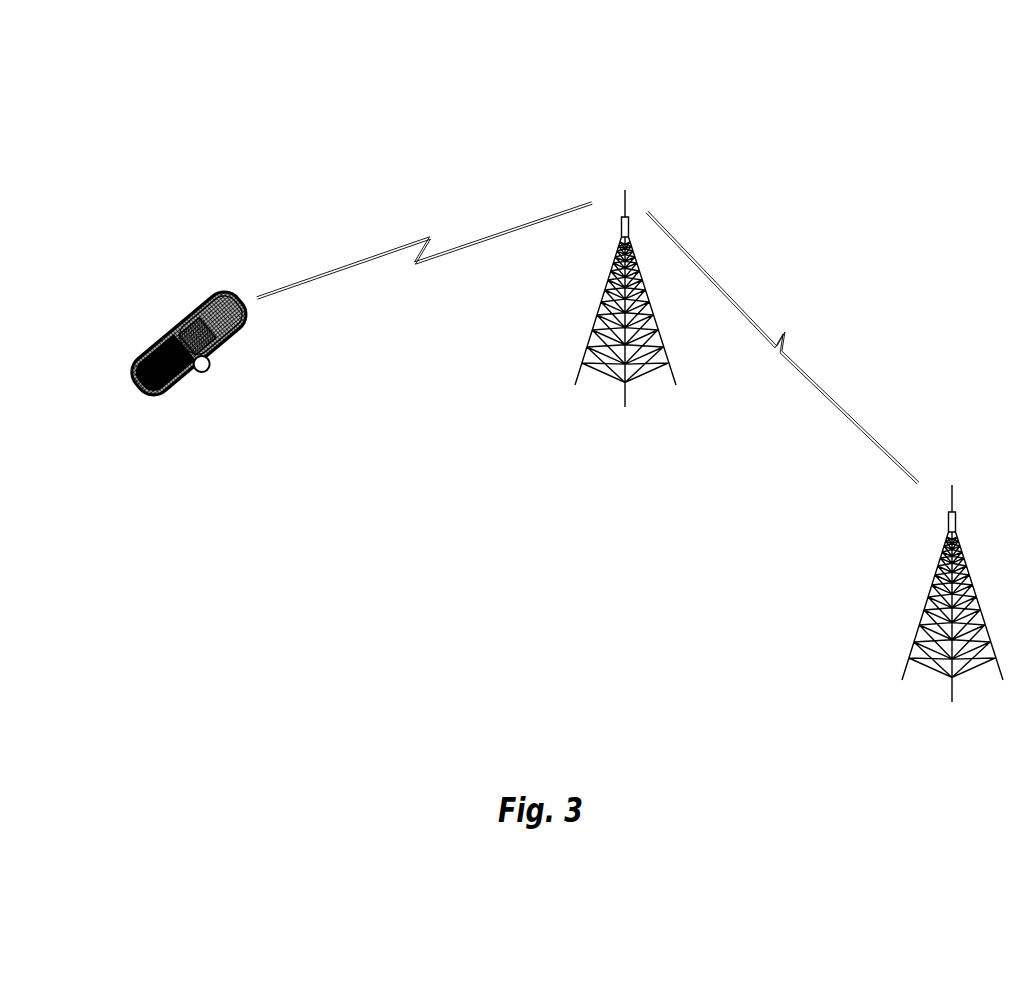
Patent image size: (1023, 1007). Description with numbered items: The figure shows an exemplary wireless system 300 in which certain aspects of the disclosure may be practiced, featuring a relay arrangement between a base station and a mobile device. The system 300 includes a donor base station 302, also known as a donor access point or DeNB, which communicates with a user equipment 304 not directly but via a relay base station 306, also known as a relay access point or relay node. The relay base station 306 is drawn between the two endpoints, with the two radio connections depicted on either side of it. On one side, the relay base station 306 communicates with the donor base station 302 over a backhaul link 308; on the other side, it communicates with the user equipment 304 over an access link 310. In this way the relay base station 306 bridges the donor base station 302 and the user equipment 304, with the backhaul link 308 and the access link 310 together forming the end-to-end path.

The wireless system 300 is at (278, 93).
The donor base station 302 is at (932, 586).
The user equipment 304 is at (177, 330).
The relay base station 306 is at (607, 284).
The backhaul link 308 is at (826, 406).
The access link 310 is at (347, 298).